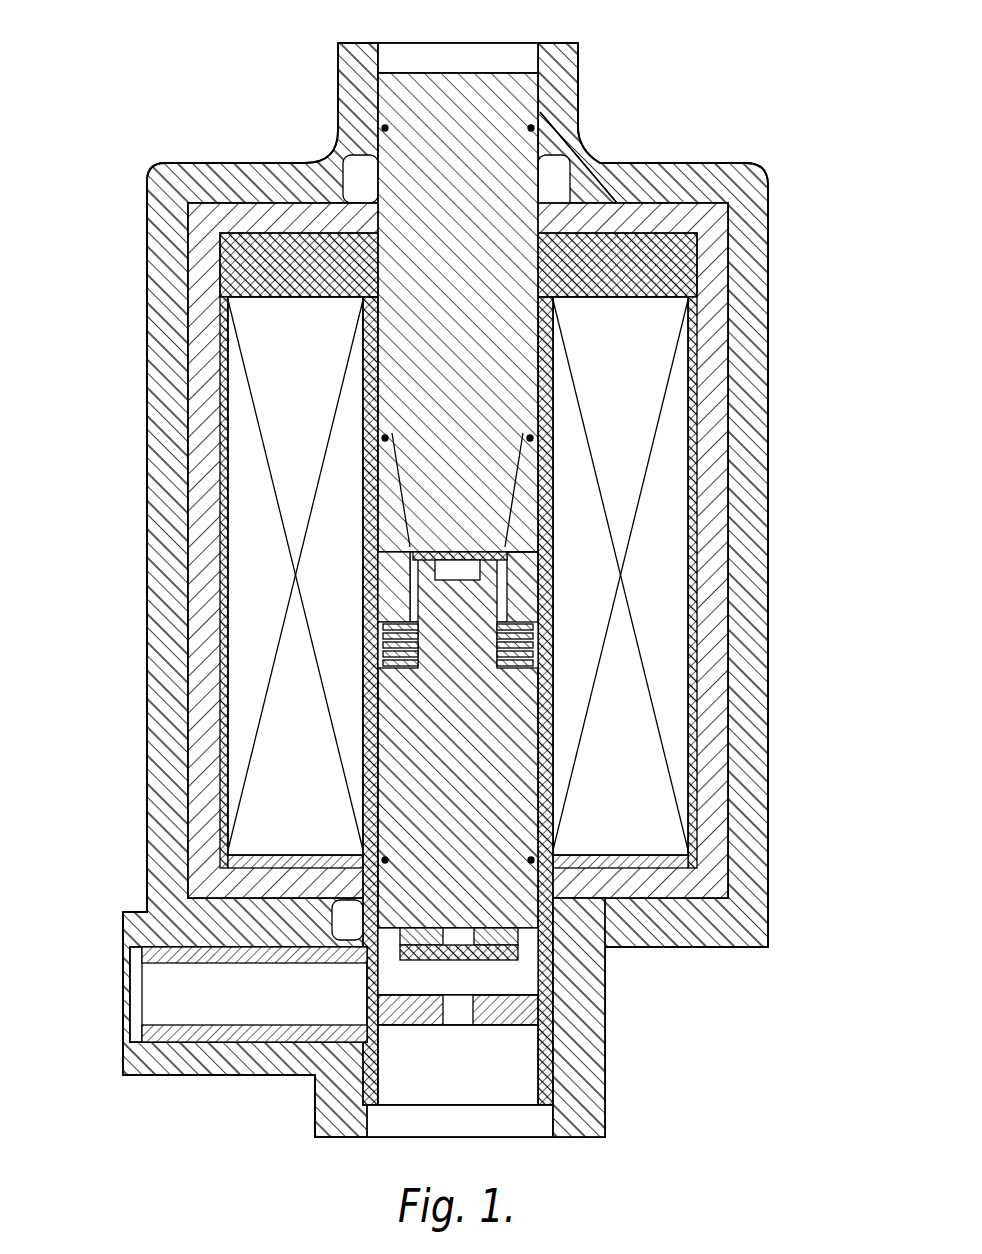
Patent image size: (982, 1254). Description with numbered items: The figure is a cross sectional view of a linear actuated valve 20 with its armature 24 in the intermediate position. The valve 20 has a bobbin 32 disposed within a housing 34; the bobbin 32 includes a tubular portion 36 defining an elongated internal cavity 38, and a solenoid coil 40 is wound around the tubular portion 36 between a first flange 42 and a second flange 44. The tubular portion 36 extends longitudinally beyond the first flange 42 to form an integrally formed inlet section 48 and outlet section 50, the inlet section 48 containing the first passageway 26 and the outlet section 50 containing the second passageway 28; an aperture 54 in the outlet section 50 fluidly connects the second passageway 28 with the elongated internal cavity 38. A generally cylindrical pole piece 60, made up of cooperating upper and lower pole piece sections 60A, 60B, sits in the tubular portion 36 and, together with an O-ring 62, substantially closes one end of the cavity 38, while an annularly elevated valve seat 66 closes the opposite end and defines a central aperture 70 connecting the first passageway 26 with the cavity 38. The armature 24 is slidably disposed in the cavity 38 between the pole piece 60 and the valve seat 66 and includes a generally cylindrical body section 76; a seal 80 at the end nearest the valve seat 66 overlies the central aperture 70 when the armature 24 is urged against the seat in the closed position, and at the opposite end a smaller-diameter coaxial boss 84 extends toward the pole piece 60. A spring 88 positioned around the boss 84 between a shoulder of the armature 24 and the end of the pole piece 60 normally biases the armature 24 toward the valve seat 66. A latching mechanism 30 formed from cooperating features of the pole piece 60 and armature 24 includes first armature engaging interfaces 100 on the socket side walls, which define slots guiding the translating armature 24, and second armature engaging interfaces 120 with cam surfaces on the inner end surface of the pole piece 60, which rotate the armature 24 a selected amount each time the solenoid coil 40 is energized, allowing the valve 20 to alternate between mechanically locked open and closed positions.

The linear actuated valve 20 is at (748, 58).
The armature 24 is at (560, 790).
The first passageway 26 is at (523, 1132).
The second passageway 28 is at (150, 990).
The latching mechanism 30 is at (372, 553).
The bobbin 32 is at (560, 355).
The housing 34 is at (768, 215).
The tubular portion 36 is at (555, 425).
The elongated internal cavity 38 is at (550, 500).
The solenoid coil 40 is at (245, 698).
The first flange 42 is at (235, 848).
The second flange 44 is at (232, 262).
The inlet section 48 is at (566, 1085).
The outlet section 50 is at (193, 1043).
The aperture 54 is at (365, 973).
The pole piece 60 is at (378, 275).
The upper pole piece section 60A is at (587, 145).
The lower pole piece section 60B is at (375, 640).
The O-ring 62 is at (545, 113).
The valve seat 66 is at (547, 1008).
The central aperture 70 is at (468, 1020).
The body section 76 is at (525, 740).
The seal 80 is at (510, 960).
The boss 84 is at (470, 603).
The spring 88 is at (548, 690).
The first armature engaging interfaces 100 is at (523, 660).
The second armature engaging interfaces 120 is at (455, 560).